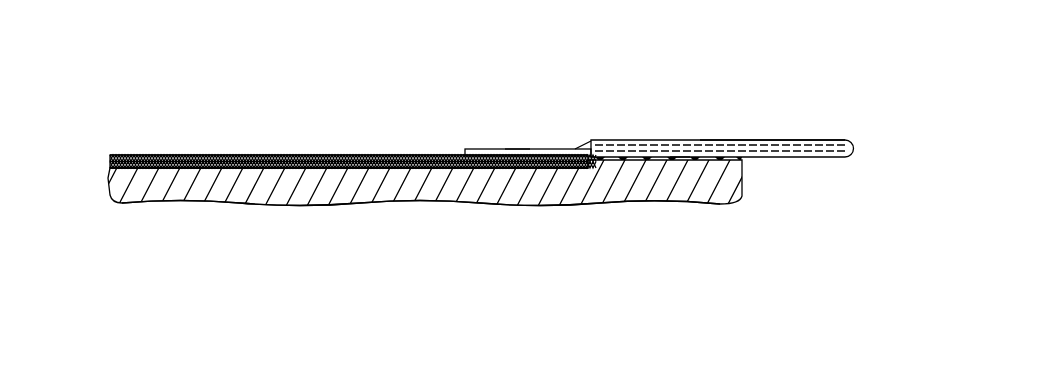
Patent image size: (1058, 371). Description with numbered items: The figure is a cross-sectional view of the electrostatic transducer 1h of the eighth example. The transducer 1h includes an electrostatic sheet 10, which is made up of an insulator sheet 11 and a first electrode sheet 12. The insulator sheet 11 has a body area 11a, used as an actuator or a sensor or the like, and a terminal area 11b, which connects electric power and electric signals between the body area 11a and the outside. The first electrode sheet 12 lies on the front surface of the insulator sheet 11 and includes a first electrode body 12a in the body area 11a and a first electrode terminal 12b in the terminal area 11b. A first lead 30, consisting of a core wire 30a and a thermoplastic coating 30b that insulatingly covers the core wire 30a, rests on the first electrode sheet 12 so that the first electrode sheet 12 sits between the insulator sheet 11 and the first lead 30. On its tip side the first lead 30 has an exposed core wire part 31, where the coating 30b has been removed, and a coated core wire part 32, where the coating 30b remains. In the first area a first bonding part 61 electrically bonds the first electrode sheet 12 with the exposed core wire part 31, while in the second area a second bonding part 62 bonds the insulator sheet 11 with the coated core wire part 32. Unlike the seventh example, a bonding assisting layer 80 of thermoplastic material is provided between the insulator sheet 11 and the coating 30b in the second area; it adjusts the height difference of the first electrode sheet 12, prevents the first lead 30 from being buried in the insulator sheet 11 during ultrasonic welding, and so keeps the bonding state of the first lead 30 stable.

The transducer 1h is at (860, 100).
The electrostatic sheet 10 is at (116, 155).
The insulator sheet 11 is at (250, 185).
The body area 11a is at (293, 183).
The terminal area 11b is at (493, 187).
The first electrode sheet 12 is at (143, 155).
The first electrode body 12a is at (187, 155).
The first electrode terminal 12b is at (500, 155).
The first lead 30 is at (853, 38).
The core wire 30a is at (762, 142).
The coating 30b is at (842, 143).
The exposed core wire part 31 is at (547, 150).
The coated core wire part 32 is at (648, 141).
The first bonding part 61 is at (519, 146).
The second bonding part 62 is at (680, 150).
The bonding assisting layer 80 is at (714, 158).